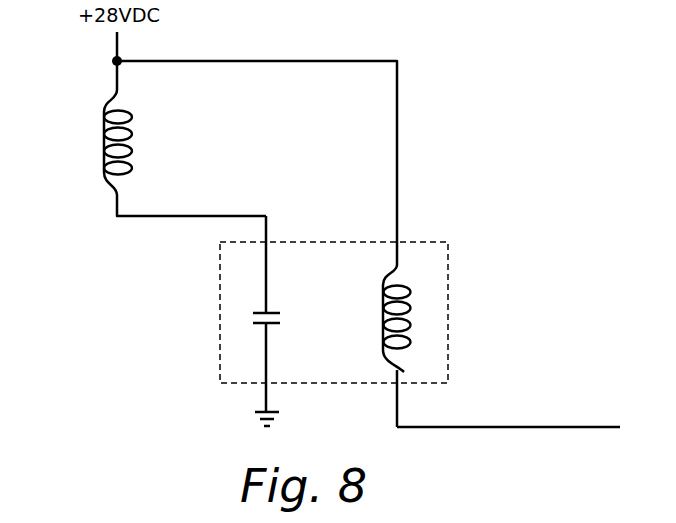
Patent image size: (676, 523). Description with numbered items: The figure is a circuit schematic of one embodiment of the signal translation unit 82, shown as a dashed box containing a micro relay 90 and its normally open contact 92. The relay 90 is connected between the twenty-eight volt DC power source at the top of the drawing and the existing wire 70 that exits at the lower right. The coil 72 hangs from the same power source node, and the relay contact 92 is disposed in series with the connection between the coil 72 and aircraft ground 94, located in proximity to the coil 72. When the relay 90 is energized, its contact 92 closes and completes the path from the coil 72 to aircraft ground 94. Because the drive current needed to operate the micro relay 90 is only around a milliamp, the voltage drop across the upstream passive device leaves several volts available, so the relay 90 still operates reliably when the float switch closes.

The existing wire 70 is at (559, 427).
The coil 72 is at (104, 143).
The signal translation unit 82 is at (448, 317).
The micro relay 90 is at (383, 318).
The normally open contact 92 is at (253, 318).
The aircraft ground 94 is at (256, 415).